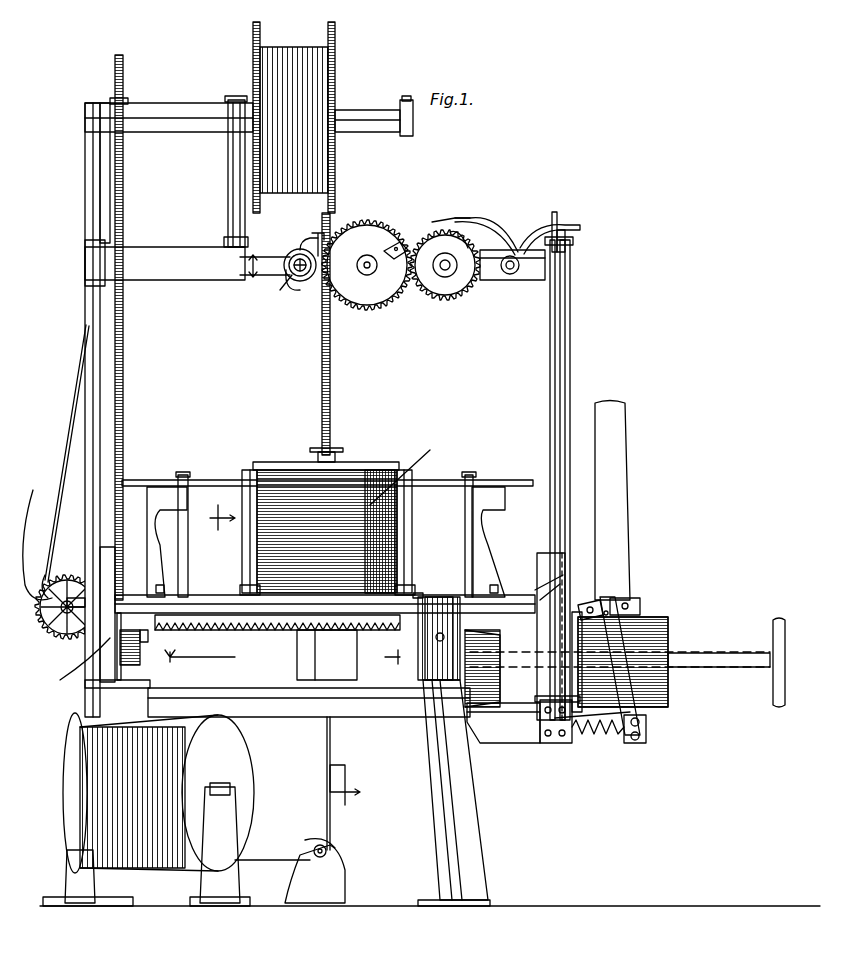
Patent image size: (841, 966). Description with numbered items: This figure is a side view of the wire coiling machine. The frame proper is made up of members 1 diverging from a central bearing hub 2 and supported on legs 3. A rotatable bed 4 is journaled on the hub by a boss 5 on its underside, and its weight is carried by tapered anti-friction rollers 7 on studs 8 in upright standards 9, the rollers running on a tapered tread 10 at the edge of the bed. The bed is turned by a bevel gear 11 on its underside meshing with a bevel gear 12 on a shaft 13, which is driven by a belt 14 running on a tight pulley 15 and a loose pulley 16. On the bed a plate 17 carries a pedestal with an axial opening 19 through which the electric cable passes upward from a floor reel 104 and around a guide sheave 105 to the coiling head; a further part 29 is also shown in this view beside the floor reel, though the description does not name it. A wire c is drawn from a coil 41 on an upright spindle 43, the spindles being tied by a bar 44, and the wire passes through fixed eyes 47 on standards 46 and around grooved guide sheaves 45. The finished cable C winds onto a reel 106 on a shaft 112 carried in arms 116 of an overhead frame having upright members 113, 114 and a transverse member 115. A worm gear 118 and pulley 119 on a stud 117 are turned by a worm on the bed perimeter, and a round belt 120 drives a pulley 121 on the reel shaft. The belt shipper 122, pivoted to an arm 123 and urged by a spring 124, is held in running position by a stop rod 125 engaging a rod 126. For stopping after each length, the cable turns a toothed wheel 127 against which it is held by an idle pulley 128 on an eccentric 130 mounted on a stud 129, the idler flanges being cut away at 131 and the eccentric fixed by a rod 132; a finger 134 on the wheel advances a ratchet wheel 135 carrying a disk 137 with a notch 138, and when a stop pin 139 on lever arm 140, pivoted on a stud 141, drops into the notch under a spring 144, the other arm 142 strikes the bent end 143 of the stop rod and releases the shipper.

The frame members 1 is at (222, 695).
The central bearing hub 2 is at (318, 705).
The legs 3 is at (458, 816).
The rotatable bed 4 is at (207, 580).
The boss 5 is at (297, 660).
The anti-friction rollers 7 is at (138, 660).
The studs 8 is at (148, 636).
The upright projections or standards 9 is at (319, 651).
The tapered tread 10 is at (387, 444).
The bevel gear 11 is at (277, 634).
The bevel gear 12 is at (485, 745).
The shaft 13 is at (690, 670).
The belt 14 is at (622, 485).
The tight pulley 15 is at (660, 625).
The loose pulley 16 is at (603, 599).
The plate 17 is at (417, 595).
The axial hole or opening 19 is at (412, 718).
The rod 29 is at (331, 815).
The coil 41 is at (382, 462).
The upright spindle 43 is at (332, 448).
The bar 44 is at (318, 460).
The grooved guide sheaves 45 is at (148, 480).
The brackets or standards 46 is at (165, 545).
The fixed eyes 47 is at (185, 475).
The finished cable C is at (336, 334).
The wire c is at (225, 480).
The reel 104 is at (222, 770).
The guide sheave 105 is at (340, 853).
The reel 106 is at (338, 72).
The shaft 112 is at (385, 125).
The upright member 113 is at (88, 332).
The upright member 114 is at (568, 360).
The transverse member 115 is at (193, 282).
The arms 116 is at (242, 192).
The stud 117 is at (52, 630).
The worm gear 118 is at (36, 492).
The pulley 119 is at (43, 565).
The belt 120 is at (75, 392).
The pulley 121 is at (127, 62).
The belt shipper 122 is at (620, 650).
The arm 123 is at (640, 745).
The spring 124 is at (588, 742).
The rod 125 is at (552, 386).
The rod 126 is at (645, 745).
The wheel 127 is at (388, 298).
The grooved idle pulley 128 is at (300, 288).
The stud 129 is at (306, 250).
The eccentric 130 is at (314, 282).
The cut away section 131 is at (292, 278).
The rod 132 is at (313, 228).
The finger 134 is at (402, 244).
The ratchet wheel 135 is at (450, 298).
The disk 137 is at (448, 265).
The notch 138 is at (460, 225).
The stop pin 139 is at (434, 220).
The lever arm 140 is at (456, 240).
The stud 141 is at (512, 282).
The lever arm 142 is at (572, 226).
The laterally bent end 143 is at (556, 212).
The spring 144 is at (568, 240).